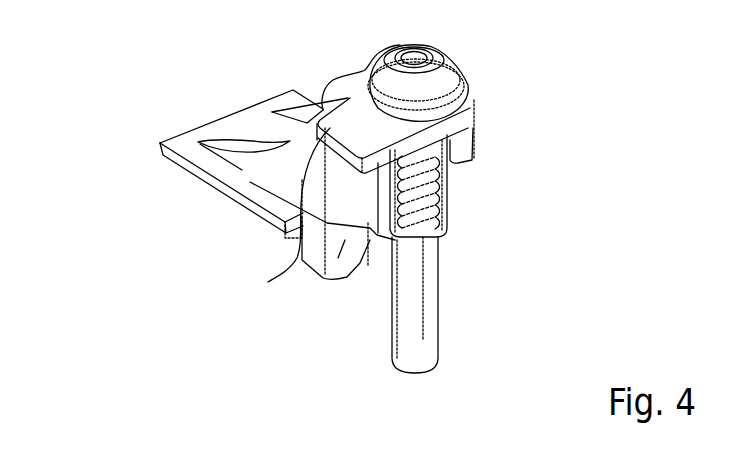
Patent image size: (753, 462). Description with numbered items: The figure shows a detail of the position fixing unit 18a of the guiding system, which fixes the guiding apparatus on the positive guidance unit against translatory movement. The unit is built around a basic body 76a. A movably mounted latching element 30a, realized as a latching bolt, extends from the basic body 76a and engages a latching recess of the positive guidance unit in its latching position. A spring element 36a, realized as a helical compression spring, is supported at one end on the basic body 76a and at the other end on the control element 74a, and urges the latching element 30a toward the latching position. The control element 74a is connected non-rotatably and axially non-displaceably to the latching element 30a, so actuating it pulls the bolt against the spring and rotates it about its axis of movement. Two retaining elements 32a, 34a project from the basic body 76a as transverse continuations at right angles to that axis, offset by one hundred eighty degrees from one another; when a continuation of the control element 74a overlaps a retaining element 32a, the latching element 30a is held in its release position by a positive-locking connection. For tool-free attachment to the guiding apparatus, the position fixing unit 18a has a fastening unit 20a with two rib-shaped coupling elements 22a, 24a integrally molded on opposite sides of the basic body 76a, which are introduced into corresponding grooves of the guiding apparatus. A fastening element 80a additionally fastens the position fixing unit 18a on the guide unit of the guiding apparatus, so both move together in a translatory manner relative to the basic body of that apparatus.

The position fixing unit 18a is at (178, 56).
The fastening unit 20a is at (116, 160).
The coupling element 22a is at (247, 185).
The coupling element 24a is at (304, 103).
The latching element 30a is at (420, 310).
The retaining element 32a is at (360, 280).
The retaining element 34a is at (471, 140).
The spring element 36a is at (440, 210).
The control element 74a is at (293, 249).
The basic body 76a is at (445, 80).
The fastening element 80a is at (338, 258).